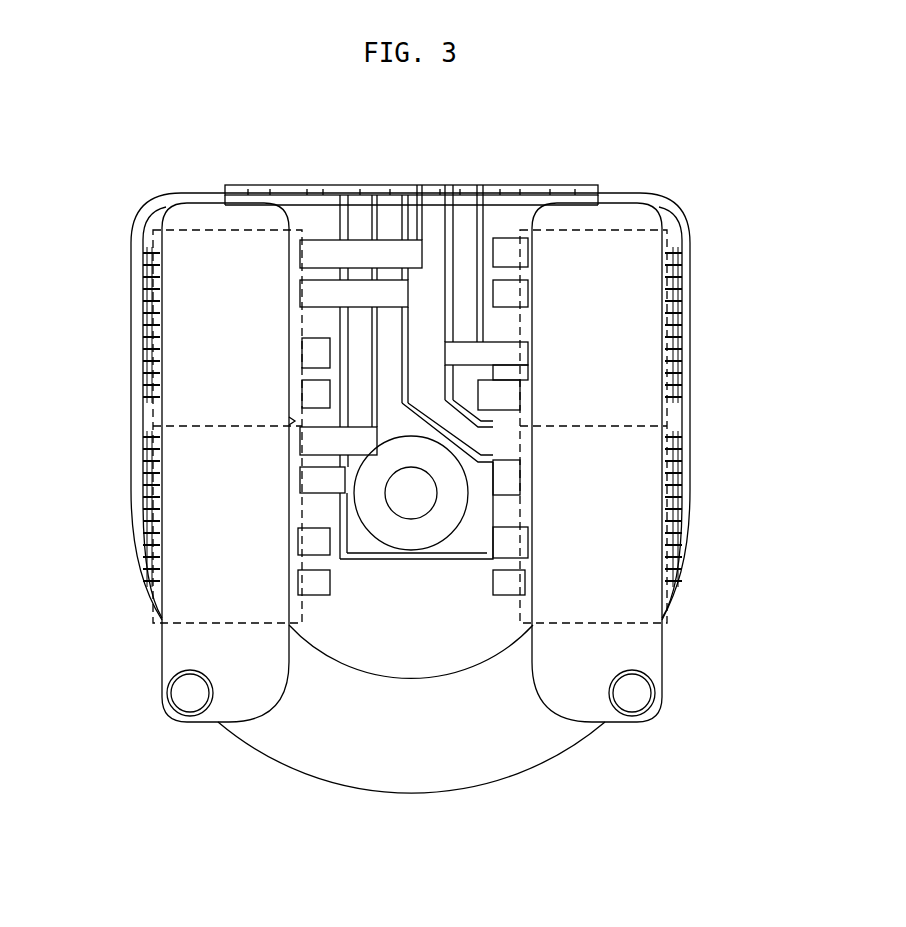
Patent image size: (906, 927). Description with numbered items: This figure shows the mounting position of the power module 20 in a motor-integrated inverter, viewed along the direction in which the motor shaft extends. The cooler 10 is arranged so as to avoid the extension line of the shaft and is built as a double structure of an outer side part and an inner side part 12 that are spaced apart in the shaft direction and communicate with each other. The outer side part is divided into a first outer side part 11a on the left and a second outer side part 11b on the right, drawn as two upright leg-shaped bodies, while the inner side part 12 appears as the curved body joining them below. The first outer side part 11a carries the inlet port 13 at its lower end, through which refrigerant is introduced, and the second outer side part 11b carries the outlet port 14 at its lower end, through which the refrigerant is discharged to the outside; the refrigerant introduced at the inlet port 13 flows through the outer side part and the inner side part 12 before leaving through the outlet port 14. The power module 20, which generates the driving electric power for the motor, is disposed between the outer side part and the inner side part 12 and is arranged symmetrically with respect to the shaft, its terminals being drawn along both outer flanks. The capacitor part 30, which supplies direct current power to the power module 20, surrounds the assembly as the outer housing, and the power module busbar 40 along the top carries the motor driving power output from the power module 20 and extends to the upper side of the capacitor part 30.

The cooler 10 is at (282, 772).
The first outer side part 11a is at (215, 222).
The second outer side part 11b is at (616, 218).
The inner side part 12 is at (412, 764).
The inlet port 13 is at (190, 693).
The outlet port 14 is at (632, 693).
The power module 20 is at (146, 323).
The capacitor part 30 is at (676, 220).
The power module busbar 40 is at (432, 185).